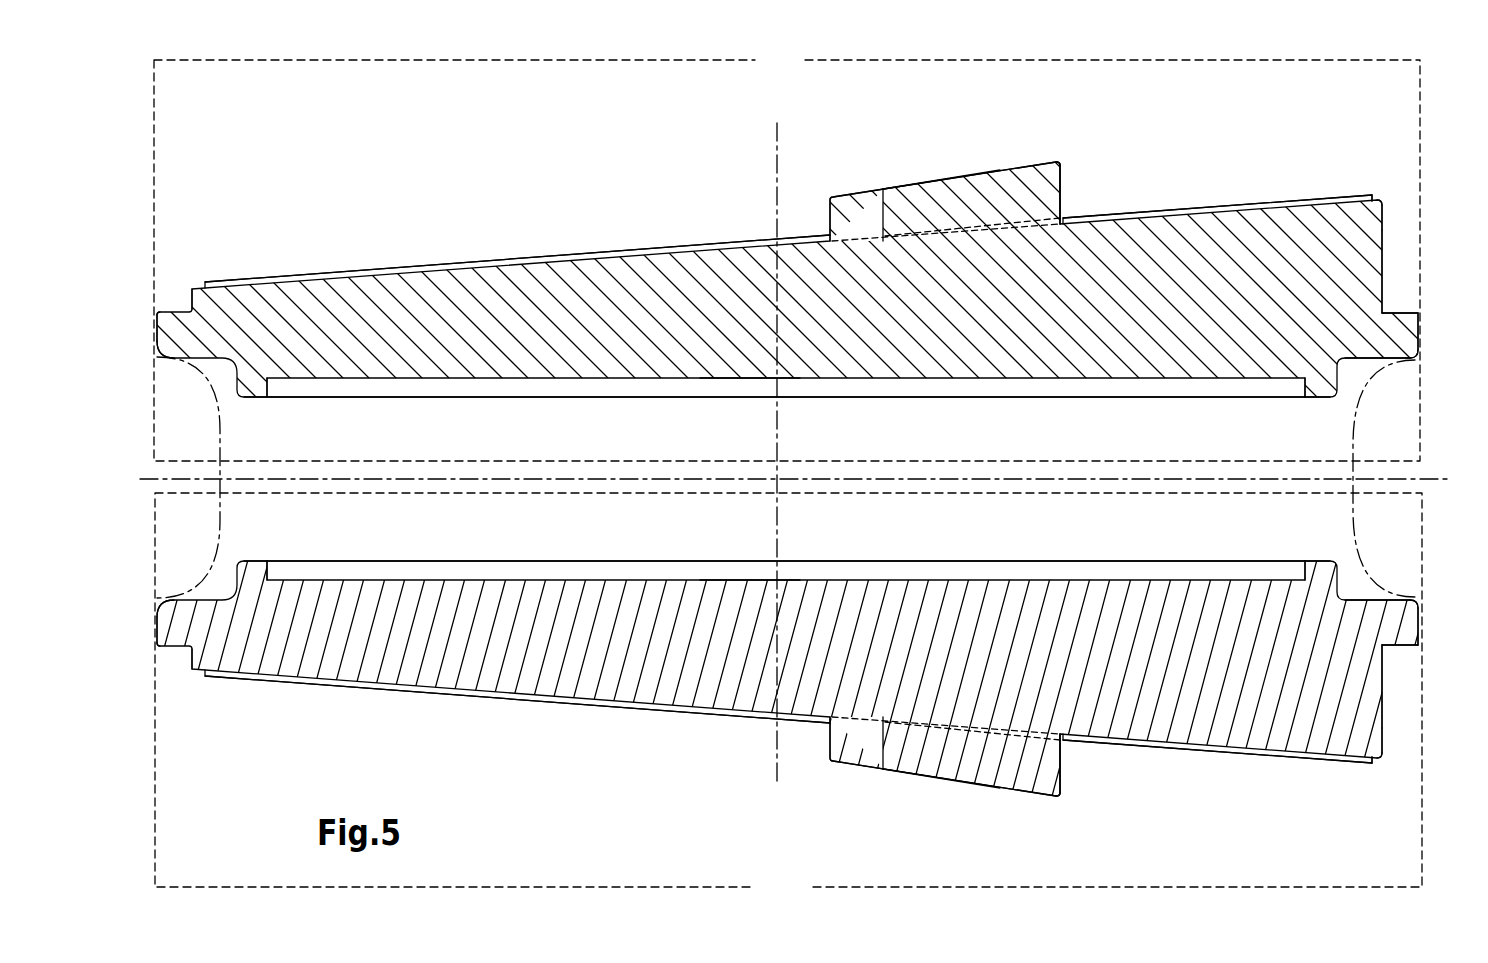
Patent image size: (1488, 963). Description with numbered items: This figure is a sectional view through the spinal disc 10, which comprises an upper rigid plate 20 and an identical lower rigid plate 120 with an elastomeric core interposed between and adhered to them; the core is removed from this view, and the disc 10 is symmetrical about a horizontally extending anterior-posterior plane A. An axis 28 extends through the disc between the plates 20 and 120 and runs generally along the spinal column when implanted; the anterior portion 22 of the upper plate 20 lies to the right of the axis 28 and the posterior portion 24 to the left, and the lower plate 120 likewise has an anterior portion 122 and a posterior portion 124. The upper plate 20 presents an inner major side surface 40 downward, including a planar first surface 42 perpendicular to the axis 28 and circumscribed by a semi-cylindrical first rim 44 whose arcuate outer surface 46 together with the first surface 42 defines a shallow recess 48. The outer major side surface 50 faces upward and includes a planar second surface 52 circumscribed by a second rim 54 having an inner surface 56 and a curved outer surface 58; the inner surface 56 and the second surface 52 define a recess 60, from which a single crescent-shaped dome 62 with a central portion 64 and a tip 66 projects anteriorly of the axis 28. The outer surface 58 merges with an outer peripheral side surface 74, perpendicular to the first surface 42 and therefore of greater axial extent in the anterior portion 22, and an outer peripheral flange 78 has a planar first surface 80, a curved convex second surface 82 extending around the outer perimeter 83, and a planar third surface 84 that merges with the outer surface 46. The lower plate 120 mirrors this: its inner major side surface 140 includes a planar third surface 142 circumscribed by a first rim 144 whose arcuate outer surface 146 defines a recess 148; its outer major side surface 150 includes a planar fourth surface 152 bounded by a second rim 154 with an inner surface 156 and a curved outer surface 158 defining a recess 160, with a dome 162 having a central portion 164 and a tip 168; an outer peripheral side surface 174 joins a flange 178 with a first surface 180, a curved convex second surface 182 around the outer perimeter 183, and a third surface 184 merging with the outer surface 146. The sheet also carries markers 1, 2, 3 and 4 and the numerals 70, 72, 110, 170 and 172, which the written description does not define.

The first direction arrow 1 is at (575, 380).
The second direction arrow 2 is at (600, 253).
The third direction arrow 3 is at (583, 578).
The fourth direction arrow 4 is at (603, 702).
The disc 10 is at (537, 155).
The upper rigid plate 20 is at (440, 245).
The anterior portion 22 is at (1296, 128).
The posterior portion 24 is at (283, 190).
The axis 28 is at (777, 138).
The inner major side surface 40 is at (1003, 465).
The first surface 42 is at (652, 385).
The first rim 44 is at (250, 382).
The arcuate outer surface 46 is at (250, 387).
The recess 48 is at (748, 400).
The outer major side surface 50 is at (787, 254).
The second surface 52 is at (667, 245).
The second rim 54 is at (198, 285).
The inner surface 56 is at (1356, 197).
The curved outer surface 58 is at (1383, 200).
The recess 60 is at (518, 267).
The dome 62 is at (970, 163).
The central portion 64 is at (1052, 160).
The tip 66 is at (857, 208).
The lug side face 70 is at (1068, 190).
The lug top face 72 is at (895, 193).
The outer peripheral side surface 74 is at (1385, 236).
The outer peripheral flange 78 is at (1422, 312).
The first surface of flange 80 is at (1400, 313).
The curved convex second surface 82 is at (1413, 350).
The outer perimeter 83 is at (150, 335).
The third surface of flange 84 is at (1368, 362).
The second sleeve assembly 110 is at (535, 803).
The lower rigid plate 120 is at (455, 715).
The anterior portion 122 is at (1297, 825).
The posterior portion 124 is at (292, 765).
The inner major side surface 140 is at (880, 492).
The third surface 142 is at (660, 578).
The first rim 144 is at (253, 573).
The arcuate outer surface 146 is at (247, 570).
The recess 148 is at (746, 573).
The outer major side surface 150 is at (788, 696).
The fourth surface 152 is at (625, 693).
The second rim 154 is at (208, 680).
The inner surface 156 is at (1358, 760).
The curved outer surface 158 is at (1384, 760).
The recess 160 is at (510, 690).
The dome 162 is at (975, 790).
The central portion 164 is at (1050, 800).
The tip 168 is at (863, 750).
The second lug side face 170 is at (1068, 777).
The second lug top face 172 is at (905, 770).
The outer peripheral side surface 174 is at (1386, 727).
The outer peripheral flange 178 is at (1422, 645).
The first surface of flange 180 is at (1400, 645).
The curved convex second surface 182 is at (1418, 610).
The outer perimeter 183 is at (157, 650).
The third surface of flange 184 is at (1370, 600).
The anterior-posterior plane A is at (815, 480).